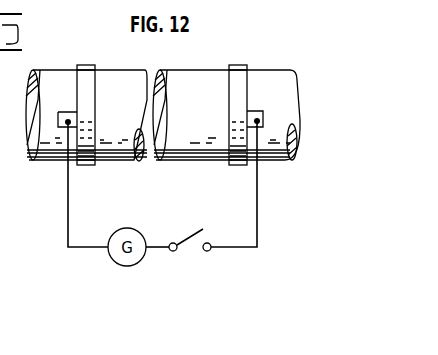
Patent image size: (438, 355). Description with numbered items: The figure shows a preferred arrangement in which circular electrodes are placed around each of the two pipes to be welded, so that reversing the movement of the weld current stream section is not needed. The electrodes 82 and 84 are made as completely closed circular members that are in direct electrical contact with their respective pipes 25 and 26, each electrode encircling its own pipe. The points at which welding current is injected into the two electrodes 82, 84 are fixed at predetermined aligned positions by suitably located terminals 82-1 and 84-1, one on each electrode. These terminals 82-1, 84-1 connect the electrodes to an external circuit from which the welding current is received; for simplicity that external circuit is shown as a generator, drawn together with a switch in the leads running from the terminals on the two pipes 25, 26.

The pipe 25 is at (40, 140).
The pipe 26 is at (287, 96).
The electrode 82 is at (90, 87).
The terminal 82-1 is at (59, 179).
The electrode 84 is at (230, 88).
The terminal 84-1 is at (259, 179).